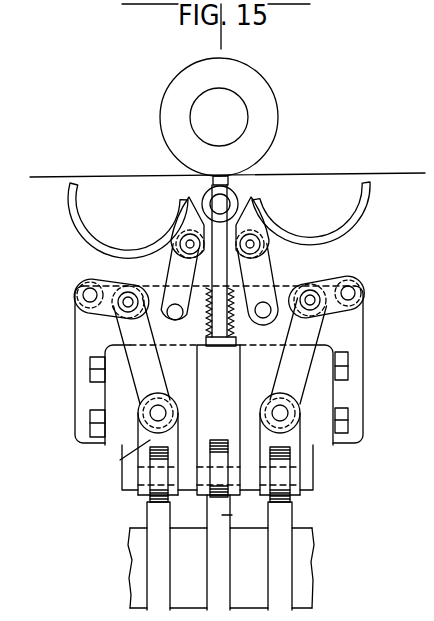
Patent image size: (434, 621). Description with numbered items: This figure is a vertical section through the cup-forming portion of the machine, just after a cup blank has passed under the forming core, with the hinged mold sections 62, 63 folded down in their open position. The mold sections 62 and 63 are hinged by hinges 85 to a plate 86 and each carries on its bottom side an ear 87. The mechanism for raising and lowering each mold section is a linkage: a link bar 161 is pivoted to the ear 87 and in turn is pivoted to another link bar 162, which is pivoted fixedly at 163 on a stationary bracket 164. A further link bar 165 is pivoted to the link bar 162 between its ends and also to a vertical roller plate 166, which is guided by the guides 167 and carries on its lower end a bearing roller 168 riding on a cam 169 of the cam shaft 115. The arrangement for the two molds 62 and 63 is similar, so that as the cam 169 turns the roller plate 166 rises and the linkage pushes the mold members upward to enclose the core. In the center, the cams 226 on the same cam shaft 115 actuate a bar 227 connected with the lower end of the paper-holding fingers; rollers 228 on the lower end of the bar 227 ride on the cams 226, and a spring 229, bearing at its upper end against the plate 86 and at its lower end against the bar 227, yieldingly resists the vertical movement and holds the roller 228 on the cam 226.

The cam 226 is at (233, 175).
The hinge 85 is at (232, 195).
The mold section 62 is at (112, 250).
The mold section 63 is at (292, 248).
The plate 86 is at (284, 272).
The ear 87 is at (198, 253).
The link bar 161 is at (172, 270).
The link bar 162 is at (108, 284).
The fixed pivot 163 is at (80, 293).
The stationary bracket 164 is at (80, 325).
The link bar 165 is at (163, 374).
The vertical roller plate 166 is at (150, 442).
The guide 167 is at (313, 467).
The bearing roller 168 is at (152, 500).
The cam 169 is at (165, 518).
The bar 227 is at (205, 377).
The roller 228 is at (211, 447).
The spring 229 is at (233, 323).
The cam shaft 115 is at (305, 572).